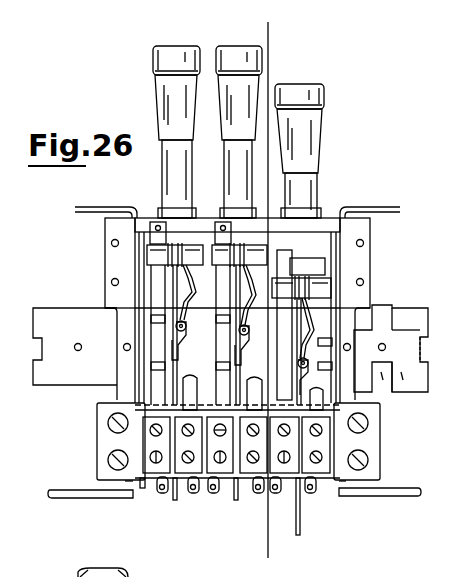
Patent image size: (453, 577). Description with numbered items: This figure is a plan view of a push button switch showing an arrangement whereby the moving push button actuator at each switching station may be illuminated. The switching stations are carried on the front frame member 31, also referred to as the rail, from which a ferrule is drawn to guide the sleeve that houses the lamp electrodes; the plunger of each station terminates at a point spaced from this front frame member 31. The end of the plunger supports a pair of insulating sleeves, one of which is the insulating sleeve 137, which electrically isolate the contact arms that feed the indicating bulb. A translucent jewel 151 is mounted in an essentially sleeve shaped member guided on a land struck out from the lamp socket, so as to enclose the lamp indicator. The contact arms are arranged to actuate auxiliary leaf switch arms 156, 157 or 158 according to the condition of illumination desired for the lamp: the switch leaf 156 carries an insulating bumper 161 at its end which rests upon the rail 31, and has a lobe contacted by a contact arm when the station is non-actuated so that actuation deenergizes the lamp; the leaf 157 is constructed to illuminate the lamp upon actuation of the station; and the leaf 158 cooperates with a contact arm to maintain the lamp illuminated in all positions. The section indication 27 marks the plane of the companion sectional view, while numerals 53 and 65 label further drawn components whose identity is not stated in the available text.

The section line 27- 27 is at (286, 22).
The front frame member 31 is at (200, 222).
The contact operating cylinder 53 is at (257, 245).
The terminal marking block 65 is at (325, 320).
The insulating sleeve 137 is at (190, 270).
The translucent jewel 151 is at (115, 570).
The auxiliary leaf switch arm 156 is at (160, 300).
The auxiliary leaf switch arm 157 is at (222, 340).
The auxiliary leaf switch arm 158 is at (285, 336).
The insulating bumper 161 is at (157, 222).